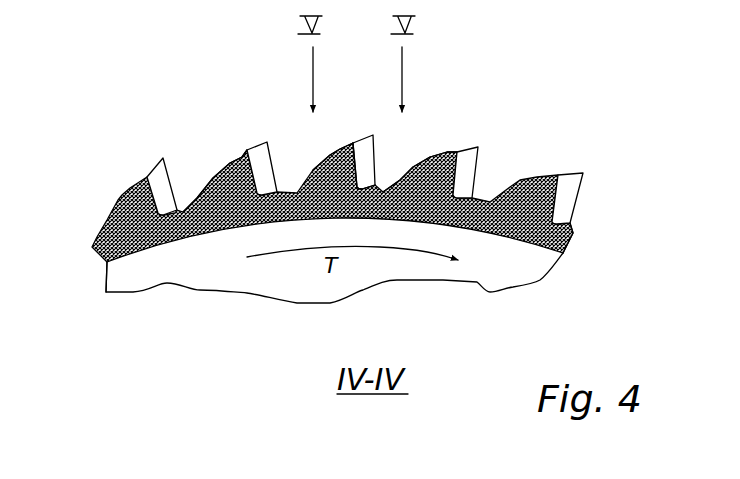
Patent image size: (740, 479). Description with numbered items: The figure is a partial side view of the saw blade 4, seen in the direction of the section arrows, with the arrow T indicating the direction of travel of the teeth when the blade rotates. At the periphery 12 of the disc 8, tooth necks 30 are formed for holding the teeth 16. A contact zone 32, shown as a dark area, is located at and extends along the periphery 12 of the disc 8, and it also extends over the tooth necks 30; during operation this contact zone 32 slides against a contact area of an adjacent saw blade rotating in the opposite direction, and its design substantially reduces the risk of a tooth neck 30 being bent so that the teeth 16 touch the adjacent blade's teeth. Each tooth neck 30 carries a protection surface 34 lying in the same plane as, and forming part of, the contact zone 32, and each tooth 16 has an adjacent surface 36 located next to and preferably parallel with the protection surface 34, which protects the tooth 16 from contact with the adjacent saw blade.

The saw blade 4 is at (97, 163).
The disc 8 is at (473, 275).
The periphery 12 is at (120, 276).
The tooth 16 is at (253, 139).
The tooth neck 30 is at (230, 154).
The contact zone 32 is at (570, 243).
The protection surface 34 is at (330, 152).
The adjacent surface 36 is at (362, 146).